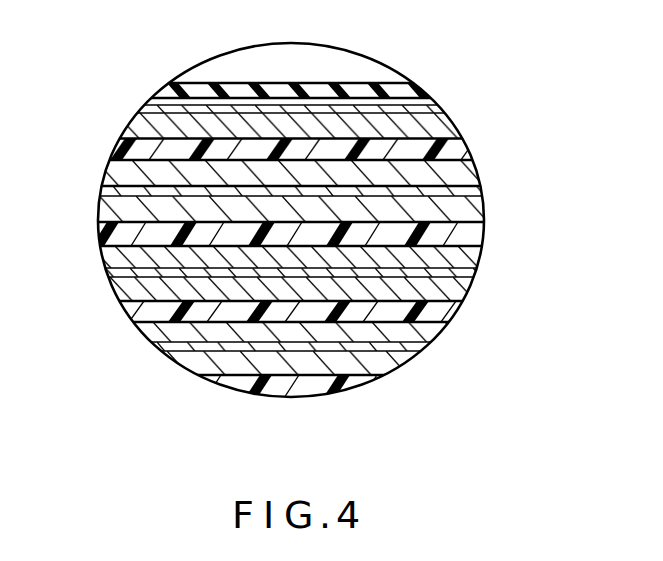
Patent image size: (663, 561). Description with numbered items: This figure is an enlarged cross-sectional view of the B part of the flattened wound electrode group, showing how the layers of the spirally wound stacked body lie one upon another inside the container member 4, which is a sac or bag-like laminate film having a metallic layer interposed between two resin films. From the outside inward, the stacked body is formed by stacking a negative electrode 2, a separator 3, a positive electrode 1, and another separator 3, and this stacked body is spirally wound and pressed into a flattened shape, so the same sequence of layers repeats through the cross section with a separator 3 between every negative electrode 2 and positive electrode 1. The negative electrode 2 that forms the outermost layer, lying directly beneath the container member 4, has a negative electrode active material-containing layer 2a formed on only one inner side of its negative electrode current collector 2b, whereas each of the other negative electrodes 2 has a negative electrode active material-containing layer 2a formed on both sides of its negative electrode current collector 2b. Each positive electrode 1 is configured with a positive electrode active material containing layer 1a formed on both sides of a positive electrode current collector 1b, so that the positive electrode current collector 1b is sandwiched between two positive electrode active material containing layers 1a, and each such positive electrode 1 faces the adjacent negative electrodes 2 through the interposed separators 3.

The B part B is at (202, 73).
The positive electrode 1 is at (564, 135).
The positive electrode active material containing layer 1a is at (462, 173).
The positive electrode current collector 1b is at (462, 192).
The negative electrode 2 is at (533, 63).
The negative electrode active material-containing layer 2a is at (435, 127).
The negative electrode current collector 2b is at (432, 110).
The separator 3 is at (130, 150).
The container member 4 is at (413, 90).